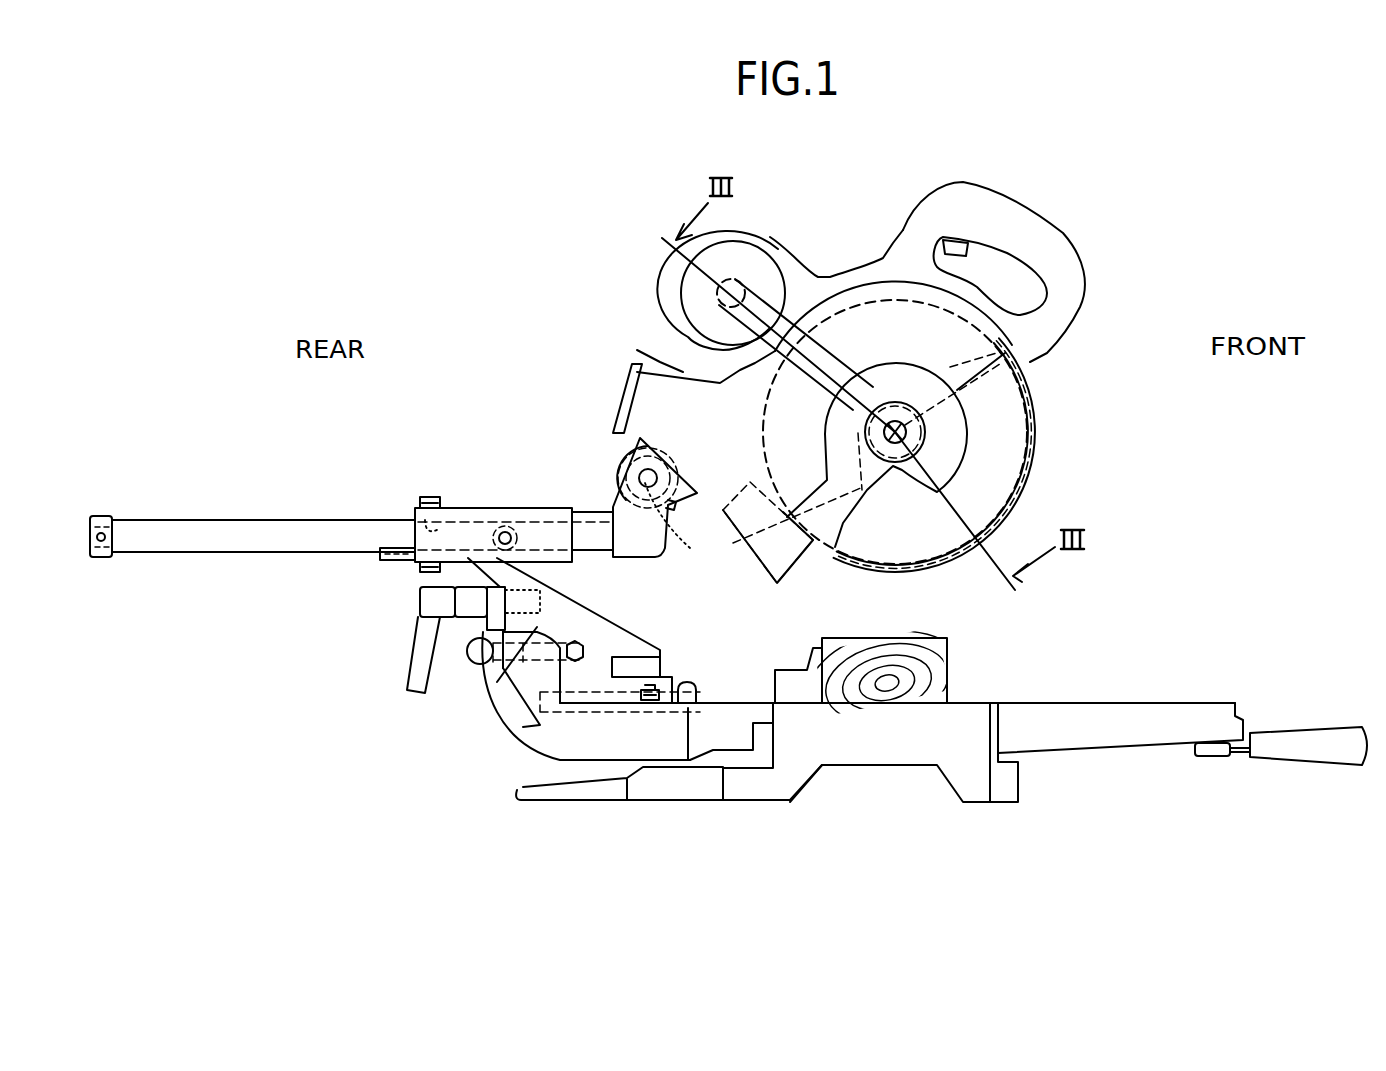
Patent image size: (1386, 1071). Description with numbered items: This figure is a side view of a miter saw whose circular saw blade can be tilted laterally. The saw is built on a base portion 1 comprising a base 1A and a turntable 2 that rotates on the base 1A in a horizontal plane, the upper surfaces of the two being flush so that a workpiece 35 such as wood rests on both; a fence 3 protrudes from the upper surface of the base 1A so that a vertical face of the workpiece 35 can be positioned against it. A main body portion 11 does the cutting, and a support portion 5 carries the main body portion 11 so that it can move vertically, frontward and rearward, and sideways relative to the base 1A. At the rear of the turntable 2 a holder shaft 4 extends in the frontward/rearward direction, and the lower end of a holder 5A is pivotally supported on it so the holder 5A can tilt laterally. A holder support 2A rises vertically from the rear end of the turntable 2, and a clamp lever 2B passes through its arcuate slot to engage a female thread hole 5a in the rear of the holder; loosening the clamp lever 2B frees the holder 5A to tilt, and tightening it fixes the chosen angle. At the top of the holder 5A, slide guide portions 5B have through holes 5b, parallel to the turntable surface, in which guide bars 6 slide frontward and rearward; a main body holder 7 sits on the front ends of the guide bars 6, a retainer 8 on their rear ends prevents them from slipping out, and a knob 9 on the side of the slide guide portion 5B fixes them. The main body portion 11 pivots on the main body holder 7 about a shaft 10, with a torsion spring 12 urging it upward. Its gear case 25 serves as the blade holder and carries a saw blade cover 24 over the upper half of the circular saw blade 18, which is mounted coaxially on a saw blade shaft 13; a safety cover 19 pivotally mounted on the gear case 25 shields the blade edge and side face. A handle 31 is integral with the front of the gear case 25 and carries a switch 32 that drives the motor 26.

The base portion 1 is at (836, 796).
The base 1A is at (958, 772).
The turntable 2 is at (1155, 715).
The holder support 2A is at (510, 703).
The clamp lever 2B is at (415, 682).
The fence 3 is at (813, 653).
The workpiece 35 is at (937, 682).
The holder shaft 4 is at (603, 714).
The support portion 5 is at (410, 727).
The holder 5A is at (490, 672).
The slide guide portion 5B is at (512, 512).
The female thread hole 5a is at (540, 598).
The through hole 5b is at (422, 520).
The guide bar 6 is at (287, 520).
The main body holder 7 is at (625, 512).
The retainer 8 is at (108, 520).
The knob 9 is at (490, 525).
The shaft 10 is at (640, 473).
The main body portion 11 is at (843, 273).
The torsion spring 12 is at (676, 526).
The saw blade shaft 13 is at (912, 430).
The circular saw blade 18 is at (1003, 460).
The safety cover 19 is at (1010, 510).
The saw blade cover 24 is at (973, 343).
The gear case 25 is at (688, 397).
The motor 26 is at (712, 283).
The handle 31 is at (1017, 215).
The switch 32 is at (962, 238).